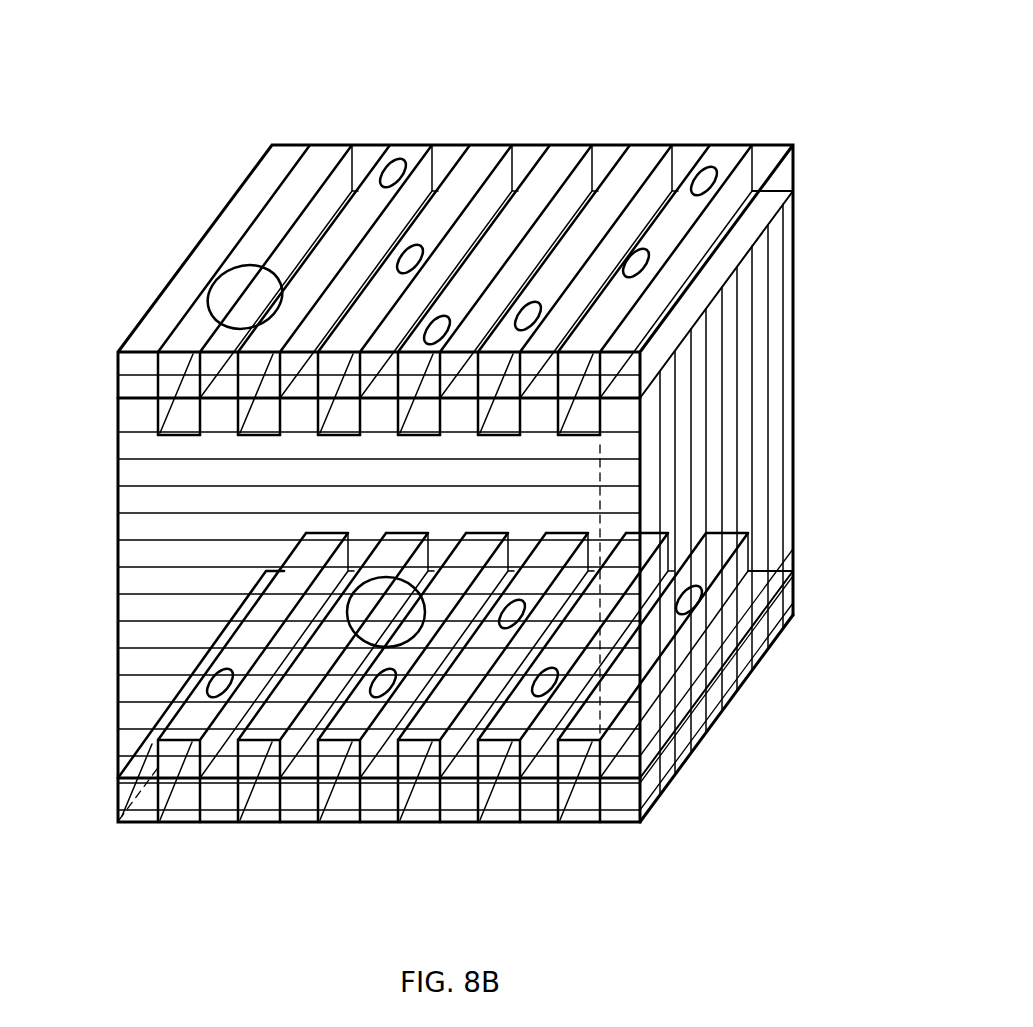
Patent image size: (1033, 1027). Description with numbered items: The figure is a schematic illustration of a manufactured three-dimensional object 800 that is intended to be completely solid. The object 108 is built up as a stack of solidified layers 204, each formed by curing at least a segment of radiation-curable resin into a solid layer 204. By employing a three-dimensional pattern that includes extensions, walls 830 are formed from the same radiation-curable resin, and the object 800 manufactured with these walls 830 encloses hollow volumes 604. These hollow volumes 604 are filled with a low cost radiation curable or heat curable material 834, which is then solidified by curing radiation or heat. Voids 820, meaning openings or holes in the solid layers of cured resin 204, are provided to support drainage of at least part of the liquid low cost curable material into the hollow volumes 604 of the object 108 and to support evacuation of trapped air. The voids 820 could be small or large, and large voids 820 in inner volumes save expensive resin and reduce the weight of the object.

The 3D object 800 is at (330, 78).
The 3D object 108 is at (246, 215).
The solidified 3D layer 204 is at (636, 172).
The void 820 is at (388, 162).
The hollow volume 604 is at (524, 436).
The wall 830 is at (145, 523).
The low cost radiation curable or heat curable material 834 is at (726, 452).